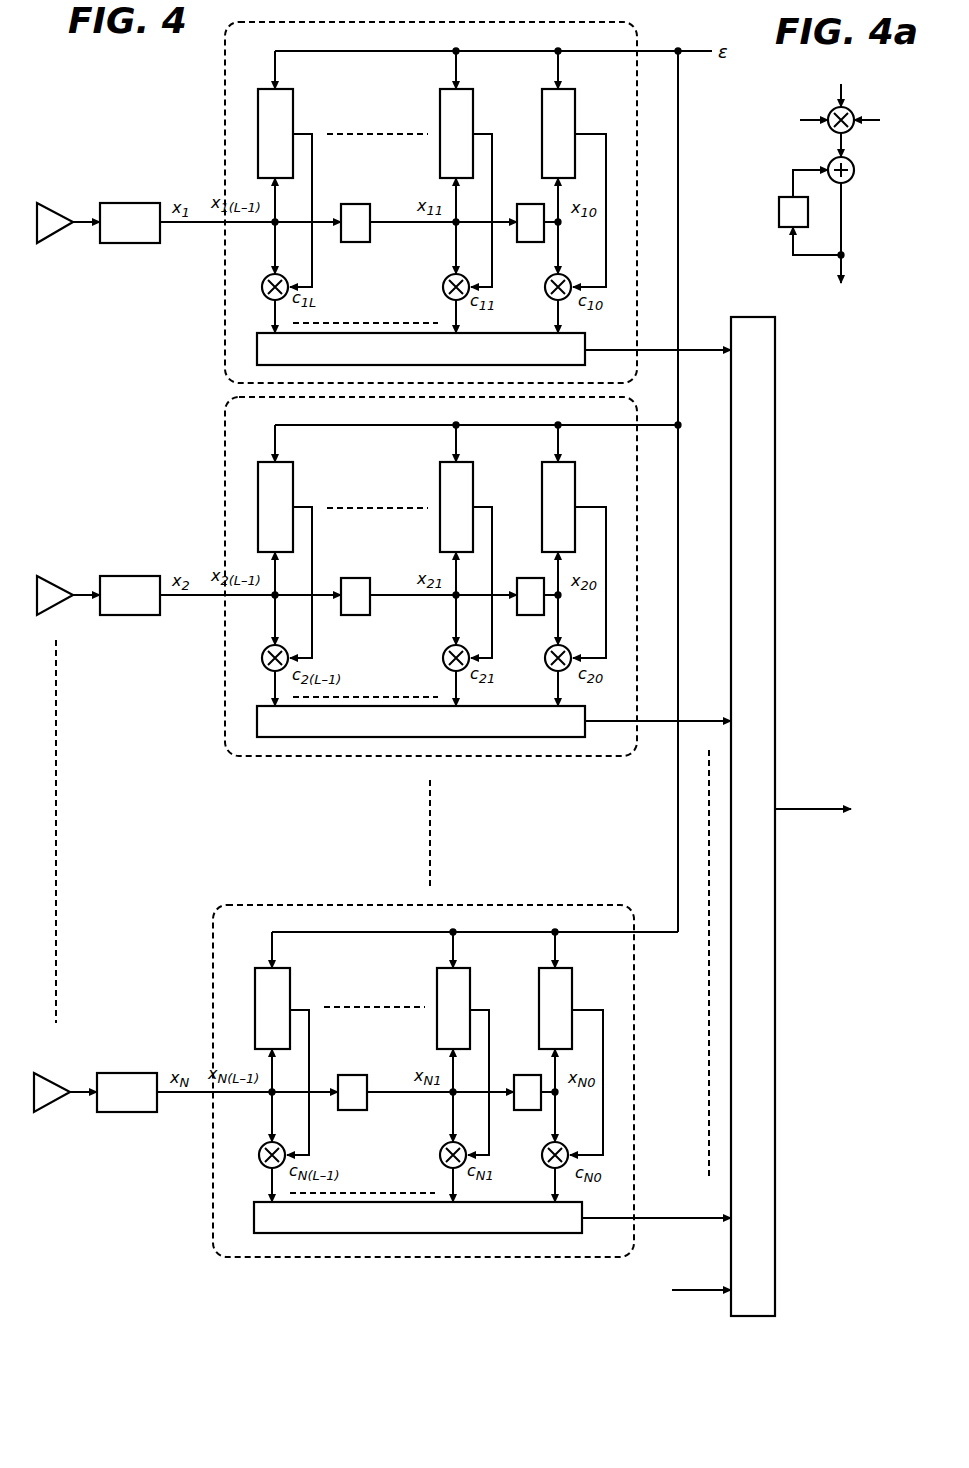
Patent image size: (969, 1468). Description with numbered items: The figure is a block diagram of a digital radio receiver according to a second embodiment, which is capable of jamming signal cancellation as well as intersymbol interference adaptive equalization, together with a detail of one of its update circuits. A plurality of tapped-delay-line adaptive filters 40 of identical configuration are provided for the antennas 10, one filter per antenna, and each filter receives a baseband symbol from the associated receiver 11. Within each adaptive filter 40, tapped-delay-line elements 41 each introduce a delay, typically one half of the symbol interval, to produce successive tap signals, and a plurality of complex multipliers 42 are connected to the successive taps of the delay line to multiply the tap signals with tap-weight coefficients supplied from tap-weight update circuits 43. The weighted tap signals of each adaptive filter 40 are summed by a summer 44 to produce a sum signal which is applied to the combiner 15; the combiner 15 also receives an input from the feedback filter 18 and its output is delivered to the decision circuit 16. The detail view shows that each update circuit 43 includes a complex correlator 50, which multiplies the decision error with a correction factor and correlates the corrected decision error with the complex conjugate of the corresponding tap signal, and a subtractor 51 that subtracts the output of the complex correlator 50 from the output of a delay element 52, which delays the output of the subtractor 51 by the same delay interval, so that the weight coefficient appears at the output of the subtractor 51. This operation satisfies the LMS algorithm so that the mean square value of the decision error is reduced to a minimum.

In FIG. 4, the antenna 10 is at (56, 210).
In FIG. 4, the receiver 11 is at (122, 203).
In FIG. 4, the combiner 15 is at (756, 317).
In FIG. 4, the decision circuit 16 is at (835, 770).
In FIG. 4, the feedback filter 18 is at (594, 1292).
In FIG. 4, the tapped-delay-line adaptive filter 40 is at (225, 106).
In FIG. 4, the tapped-delay-line element 41 is at (356, 204).
In FIG. 4, the complex multiplier 42 is at (262, 288).
In FIG. 4, the tap-weight update circuit 43 is at (293, 116).
In FIG. 4a, the tap-weight update circuit 43 is at (800, 93).
In FIG. 4, the summer 44 is at (388, 333).
In FIG. 4a, the complex correlator 50 is at (851, 113).
In FIG. 4a, the subtractor 51 is at (852, 165).
In FIG. 4a, the delay element 52 is at (779, 206).